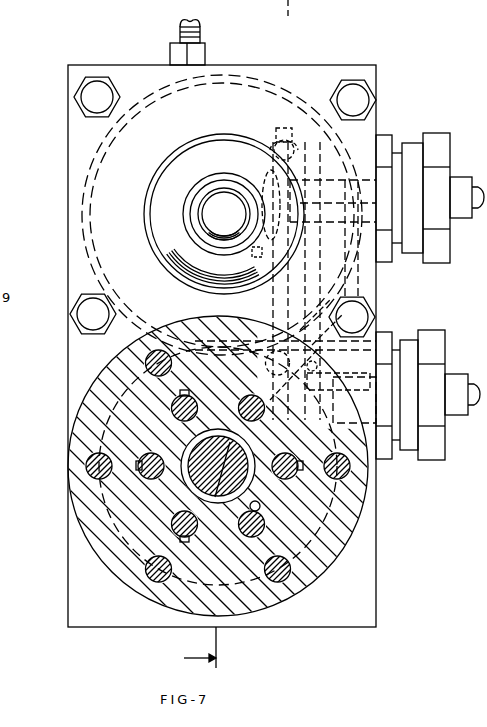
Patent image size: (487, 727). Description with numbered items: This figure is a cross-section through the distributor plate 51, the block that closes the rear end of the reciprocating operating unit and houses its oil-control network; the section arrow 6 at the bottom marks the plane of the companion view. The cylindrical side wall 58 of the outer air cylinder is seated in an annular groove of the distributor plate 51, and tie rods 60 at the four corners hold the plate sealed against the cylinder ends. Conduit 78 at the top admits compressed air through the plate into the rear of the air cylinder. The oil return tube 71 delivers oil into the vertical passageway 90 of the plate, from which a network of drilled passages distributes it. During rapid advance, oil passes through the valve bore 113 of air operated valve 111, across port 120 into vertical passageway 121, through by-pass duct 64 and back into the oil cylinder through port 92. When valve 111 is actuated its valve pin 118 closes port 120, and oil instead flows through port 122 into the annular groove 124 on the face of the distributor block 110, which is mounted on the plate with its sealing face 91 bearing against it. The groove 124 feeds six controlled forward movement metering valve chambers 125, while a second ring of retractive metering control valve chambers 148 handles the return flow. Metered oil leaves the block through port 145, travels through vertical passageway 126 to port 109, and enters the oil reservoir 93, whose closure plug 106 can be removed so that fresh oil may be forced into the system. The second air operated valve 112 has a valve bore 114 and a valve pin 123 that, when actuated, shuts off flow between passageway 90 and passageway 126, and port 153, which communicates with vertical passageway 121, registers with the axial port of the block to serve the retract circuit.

The section line 6- 6 is at (193, 647).
The distributor plate 51 is at (346, 632).
The cylindrical side wall 58 is at (84, 154).
The tie rods 60 is at (103, 92).
The by-pass duct 64 is at (310, 262).
The oil return tube 71 is at (298, 148).
The conduit 78 is at (200, 32).
The vertical passageway 90 is at (258, 314).
The rotor disc 91 is at (348, 537).
The port 92 is at (228, 214).
The oil reservoir 93 is at (189, 169).
The closure plug 106 is at (237, 214).
The port 109 is at (252, 258).
The distributor block 110 is at (330, 560).
The air operated valve 111 is at (432, 142).
The air operated valve 112 is at (430, 349).
The valve bore 113 is at (326, 184).
The valve bore 114 is at (328, 412).
The valve pin 118 is at (318, 222).
The port 120 is at (310, 246).
The vertical passageway 121 is at (335, 285).
The port 122 is at (292, 352).
The valve pin 123 is at (332, 364).
The annular groove 124 is at (168, 600).
The controlled forward movement metering valve chamber 125 is at (148, 358).
The vertical passageway 126 is at (252, 270).
The port 145 is at (258, 503).
The retractive metering control valve chamber 148 is at (165, 450).
The port 153 is at (318, 372).